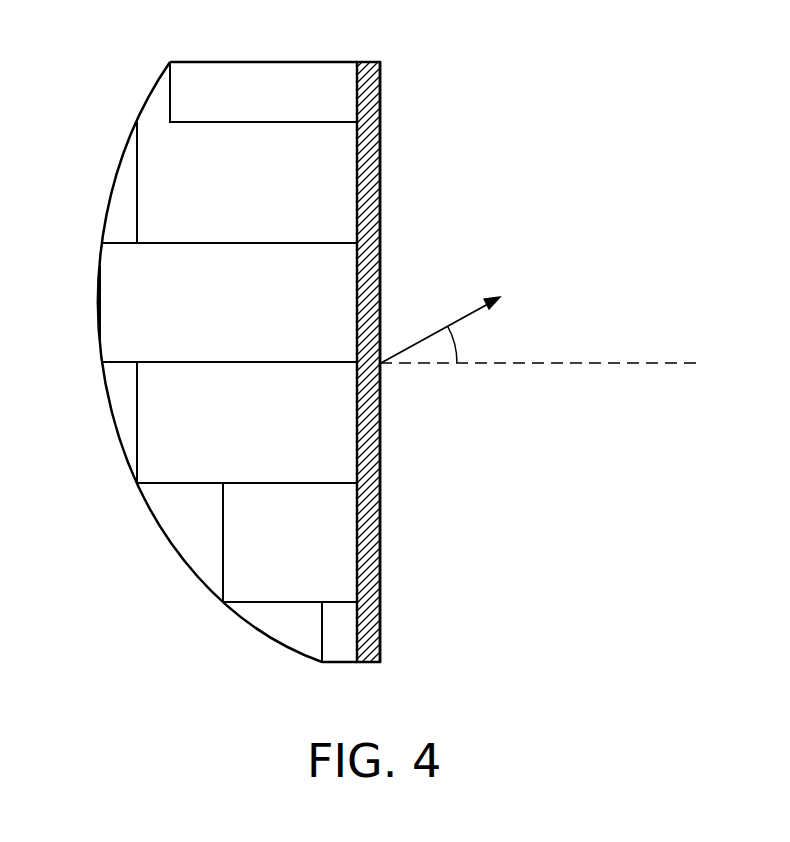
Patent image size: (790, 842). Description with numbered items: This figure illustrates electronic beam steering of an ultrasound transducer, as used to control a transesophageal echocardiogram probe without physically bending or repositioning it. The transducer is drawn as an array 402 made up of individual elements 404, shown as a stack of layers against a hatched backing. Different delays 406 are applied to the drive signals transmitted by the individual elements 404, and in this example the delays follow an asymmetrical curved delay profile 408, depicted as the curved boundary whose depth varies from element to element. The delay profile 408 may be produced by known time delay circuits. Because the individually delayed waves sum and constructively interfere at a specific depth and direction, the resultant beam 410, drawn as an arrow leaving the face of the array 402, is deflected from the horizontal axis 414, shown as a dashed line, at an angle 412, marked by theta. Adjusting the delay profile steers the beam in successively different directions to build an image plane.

The array 402 is at (362, 62).
The individual elements 404 is at (372, 537).
The delays 406 is at (152, 150).
The asymmetrical curved delay profile 408 is at (180, 560).
The resultant beam 410 is at (462, 313).
The angle 412 is at (480, 338).
The horizontal axis 414 is at (688, 363).